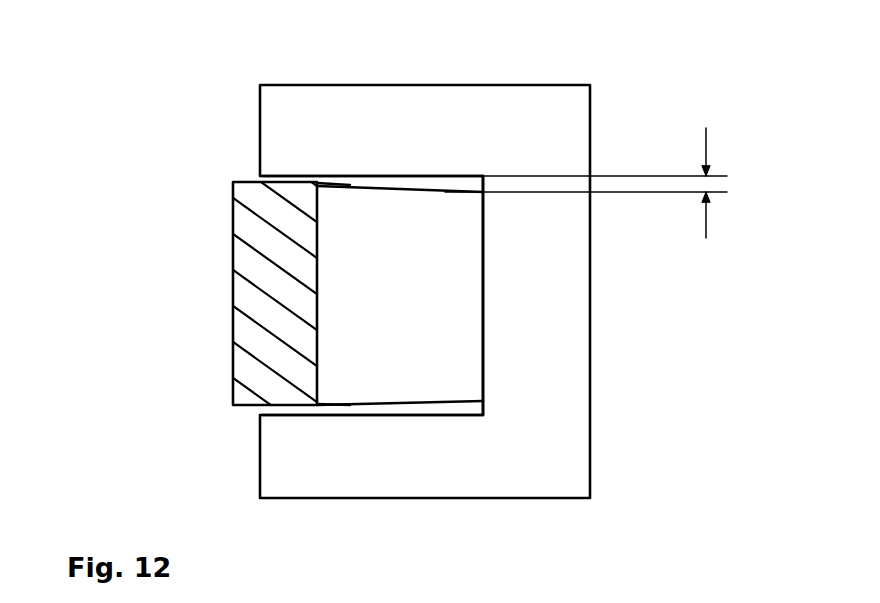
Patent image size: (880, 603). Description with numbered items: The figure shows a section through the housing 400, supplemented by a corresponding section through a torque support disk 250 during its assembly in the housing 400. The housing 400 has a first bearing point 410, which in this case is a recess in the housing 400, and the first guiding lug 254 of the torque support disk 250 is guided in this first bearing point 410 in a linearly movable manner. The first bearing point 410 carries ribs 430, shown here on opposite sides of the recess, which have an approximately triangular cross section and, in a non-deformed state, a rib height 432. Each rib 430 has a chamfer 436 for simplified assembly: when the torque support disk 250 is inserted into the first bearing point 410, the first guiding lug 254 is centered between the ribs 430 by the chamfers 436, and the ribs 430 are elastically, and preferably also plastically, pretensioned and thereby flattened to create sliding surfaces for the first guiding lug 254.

The housing 400 is at (285, 125).
The first bearing point 410 is at (463, 282).
The ribs 430 is at (463, 176).
The rib height 432 is at (708, 183).
The chamfer 436 is at (348, 187).
The torque support disk 250 is at (174, 282).
The first guiding lug 254 is at (263, 301).